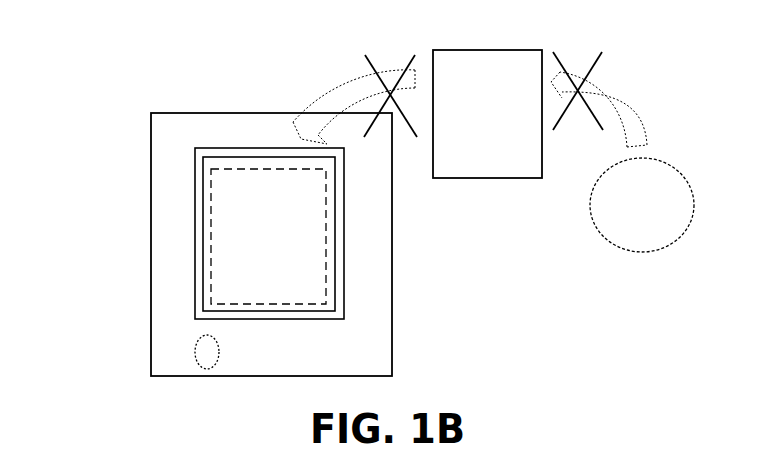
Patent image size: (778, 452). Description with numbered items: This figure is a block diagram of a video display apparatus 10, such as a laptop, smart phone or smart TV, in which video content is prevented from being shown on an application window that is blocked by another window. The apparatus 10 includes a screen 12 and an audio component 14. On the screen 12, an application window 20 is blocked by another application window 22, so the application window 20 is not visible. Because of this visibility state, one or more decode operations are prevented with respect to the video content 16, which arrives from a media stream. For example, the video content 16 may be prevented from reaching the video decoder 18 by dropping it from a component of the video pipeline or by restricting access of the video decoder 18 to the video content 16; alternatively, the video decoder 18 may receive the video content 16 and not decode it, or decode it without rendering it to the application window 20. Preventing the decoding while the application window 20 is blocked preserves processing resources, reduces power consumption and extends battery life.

The apparatus 10 is at (116, 111).
The screen 12 is at (194, 180).
The another application window 22 is at (203, 221).
The application window 20 is at (211, 246).
The audio component 14 is at (207, 335).
The video decoder 18 is at (476, 153).
The video content 16 is at (630, 245).